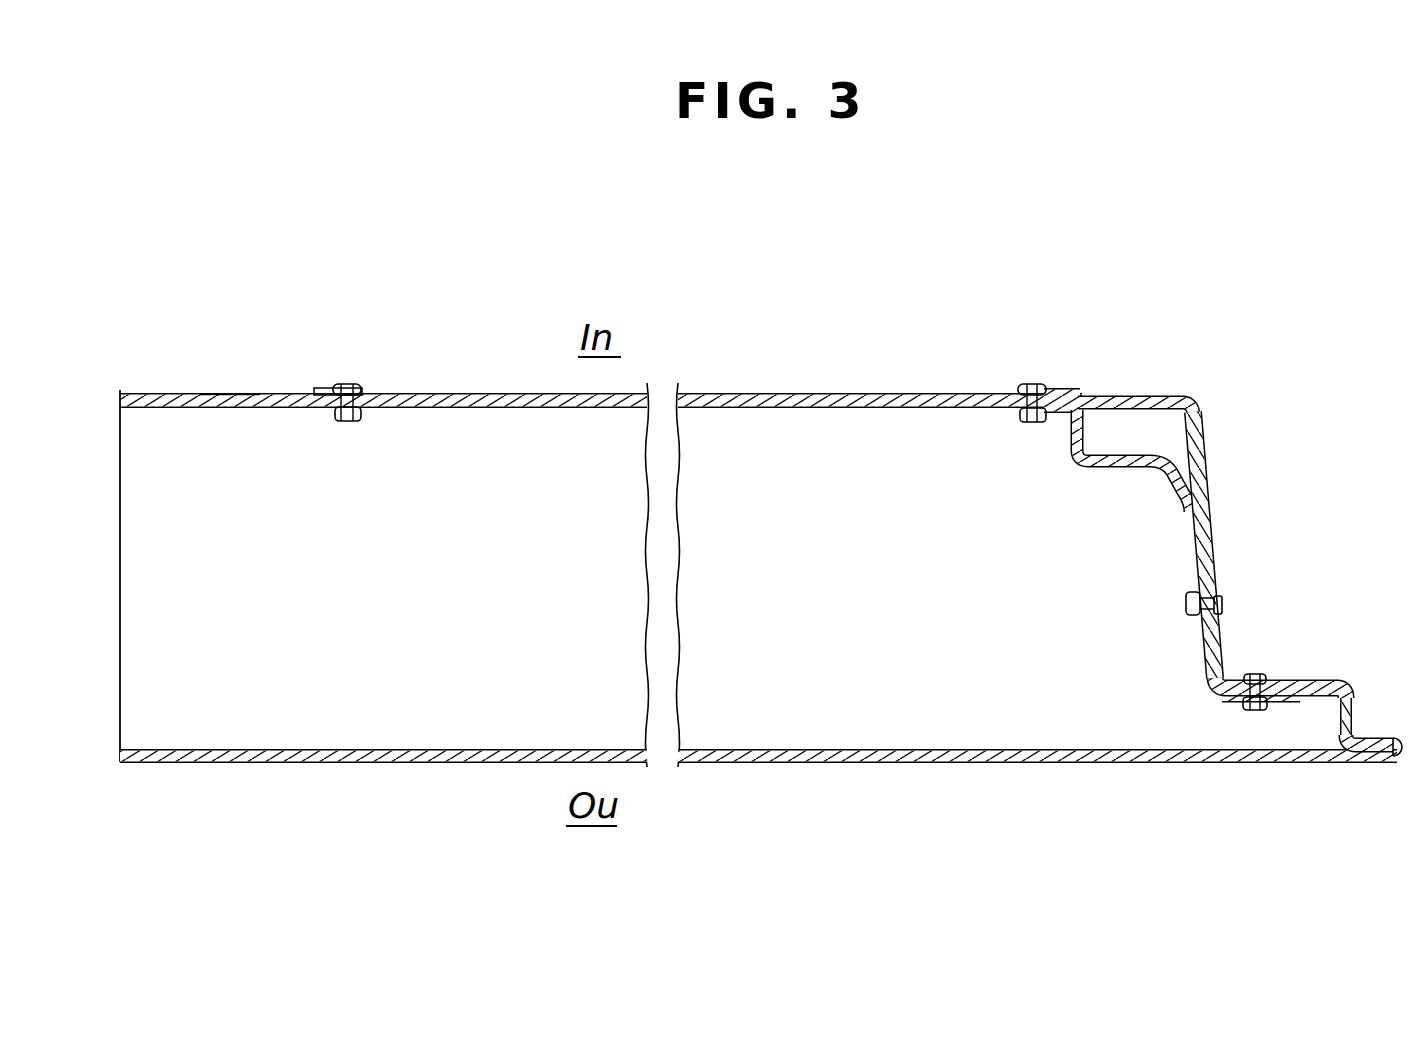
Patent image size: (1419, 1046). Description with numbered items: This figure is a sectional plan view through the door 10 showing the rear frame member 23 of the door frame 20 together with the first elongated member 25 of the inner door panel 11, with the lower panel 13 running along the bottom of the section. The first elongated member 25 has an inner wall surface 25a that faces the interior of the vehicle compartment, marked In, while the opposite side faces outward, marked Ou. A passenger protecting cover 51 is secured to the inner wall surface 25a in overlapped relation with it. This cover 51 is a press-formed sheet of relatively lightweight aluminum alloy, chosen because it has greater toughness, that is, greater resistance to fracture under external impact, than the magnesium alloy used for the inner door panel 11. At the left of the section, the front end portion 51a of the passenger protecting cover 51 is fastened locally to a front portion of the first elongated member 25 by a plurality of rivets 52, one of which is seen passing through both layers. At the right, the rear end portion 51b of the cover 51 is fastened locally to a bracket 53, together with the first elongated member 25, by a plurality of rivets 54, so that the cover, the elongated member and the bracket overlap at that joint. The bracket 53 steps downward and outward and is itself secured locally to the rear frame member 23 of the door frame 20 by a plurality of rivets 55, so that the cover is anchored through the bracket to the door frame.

The vehicle door structure 10 is at (1343, 264).
The inner door panel 11 is at (1217, 395).
The lower panel 13 is at (797, 764).
The door frame 20 is at (1240, 580).
The rear frame member 23 is at (1205, 468).
The first elongated member 25 is at (183, 377).
The inner wall surface 25a is at (225, 393).
The passenger protecting cover 51 is at (765, 377).
The front end portion 51a is at (323, 391).
The rear end portion 51b is at (1060, 389).
The rivets 52 is at (350, 389).
The bracket 53 is at (1147, 457).
The rivets 54 is at (1032, 385).
The rivets 55 is at (1218, 598).